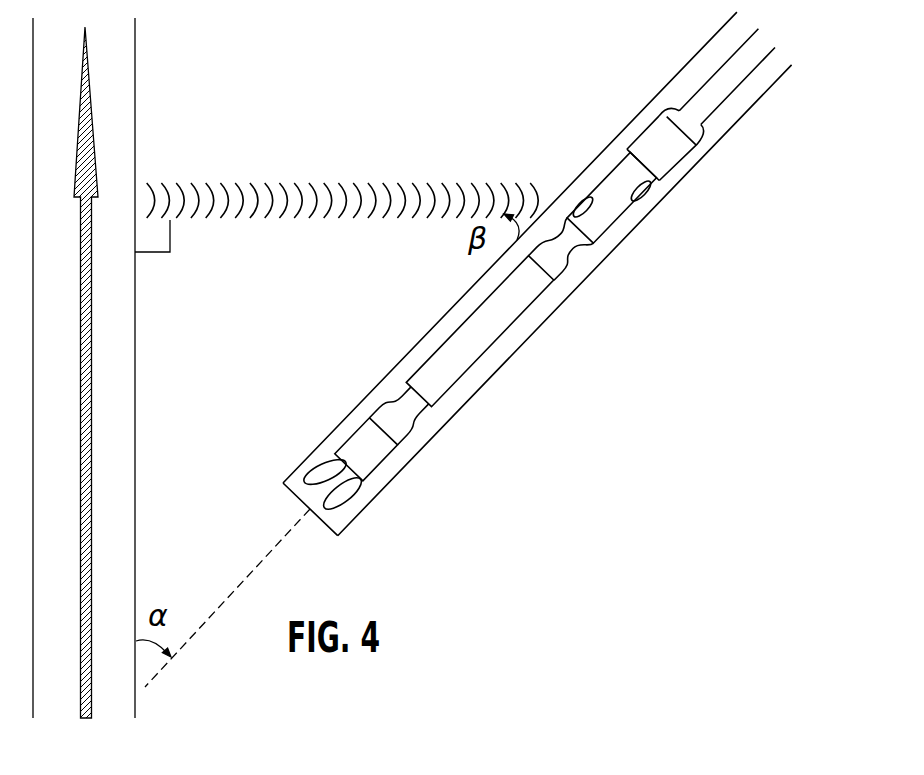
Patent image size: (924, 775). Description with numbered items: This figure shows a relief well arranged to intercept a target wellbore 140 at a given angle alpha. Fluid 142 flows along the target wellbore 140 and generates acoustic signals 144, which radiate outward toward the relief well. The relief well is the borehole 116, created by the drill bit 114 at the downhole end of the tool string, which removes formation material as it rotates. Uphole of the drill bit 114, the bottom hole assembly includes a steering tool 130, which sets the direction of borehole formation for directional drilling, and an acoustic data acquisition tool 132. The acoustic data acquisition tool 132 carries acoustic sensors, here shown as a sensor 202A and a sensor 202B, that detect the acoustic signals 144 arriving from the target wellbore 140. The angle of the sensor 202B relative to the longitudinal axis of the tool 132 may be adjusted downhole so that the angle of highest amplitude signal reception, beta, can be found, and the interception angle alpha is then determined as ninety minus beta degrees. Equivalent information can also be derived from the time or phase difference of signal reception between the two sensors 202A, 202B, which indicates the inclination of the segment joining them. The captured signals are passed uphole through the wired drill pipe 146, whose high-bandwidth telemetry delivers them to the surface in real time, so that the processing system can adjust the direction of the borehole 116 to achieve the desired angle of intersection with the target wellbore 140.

The target wellbore 140 is at (137, 90).
The fluid 142 is at (92, 293).
The acoustic signals 144 is at (247, 190).
The borehole 116 is at (393, 370).
The drill bit 114 is at (357, 483).
The steering tool 130 is at (493, 343).
The acoustic data acquisition tool 132 is at (612, 228).
The sensor 202A is at (650, 198).
The sensor 202B is at (583, 200).
The wired drill pipe 146 is at (712, 110).